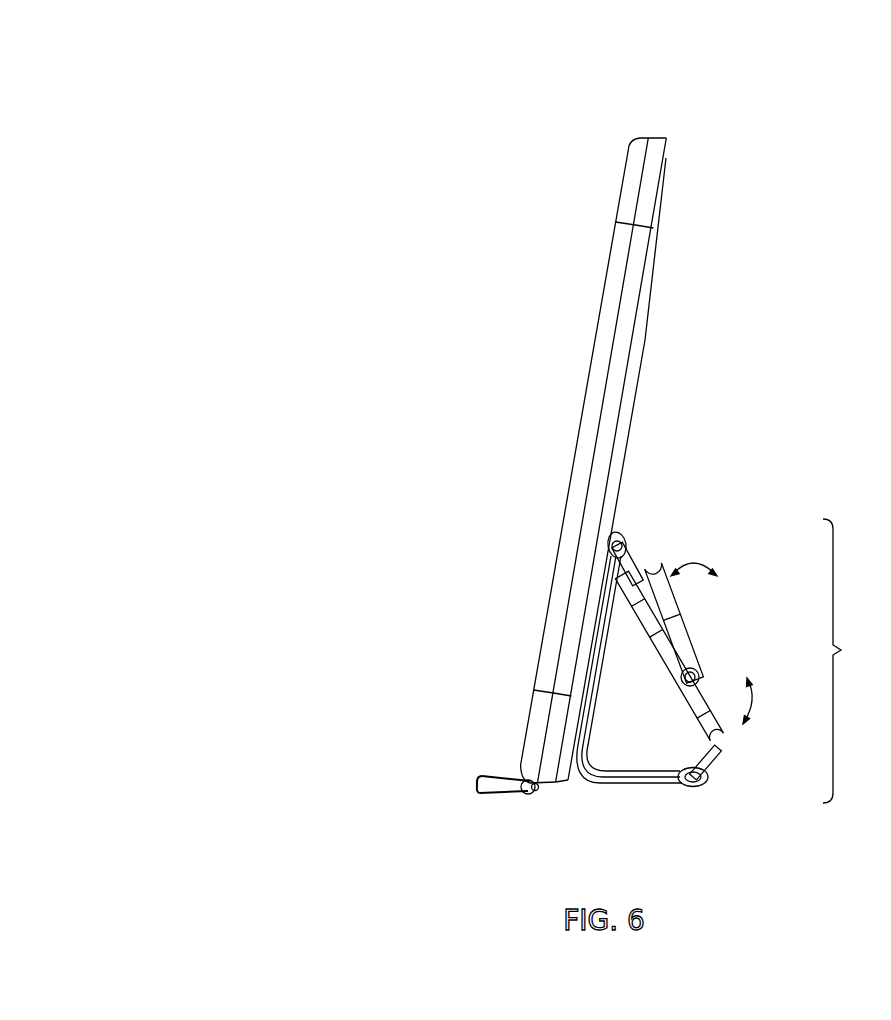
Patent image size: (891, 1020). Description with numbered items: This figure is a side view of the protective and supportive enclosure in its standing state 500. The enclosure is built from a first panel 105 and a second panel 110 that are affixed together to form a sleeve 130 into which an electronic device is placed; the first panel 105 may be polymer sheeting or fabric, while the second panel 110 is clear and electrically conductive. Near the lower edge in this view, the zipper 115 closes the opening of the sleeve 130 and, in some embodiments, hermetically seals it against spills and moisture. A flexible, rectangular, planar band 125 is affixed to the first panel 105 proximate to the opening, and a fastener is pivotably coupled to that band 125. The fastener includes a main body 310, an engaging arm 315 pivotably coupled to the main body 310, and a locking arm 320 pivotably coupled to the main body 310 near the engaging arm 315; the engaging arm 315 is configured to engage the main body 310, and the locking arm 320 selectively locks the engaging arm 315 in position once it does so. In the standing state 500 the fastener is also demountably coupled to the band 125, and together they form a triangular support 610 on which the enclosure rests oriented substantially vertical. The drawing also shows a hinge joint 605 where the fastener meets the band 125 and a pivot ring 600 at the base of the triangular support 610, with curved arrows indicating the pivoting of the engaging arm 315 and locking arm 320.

The standing state 500 is at (90, 98).
The first panel 105 is at (652, 308).
The second panel 110 is at (600, 307).
The sleeve 130 is at (652, 128).
The zipper 115 is at (482, 777).
The band 125 is at (643, 786).
The hinge 605 is at (634, 536).
The triangular support 610 is at (747, 654).
The main body 310 is at (645, 640).
The engaging arm 315 is at (657, 563).
The locking arm 320 is at (729, 728).
The pivot ring 600 is at (708, 767).